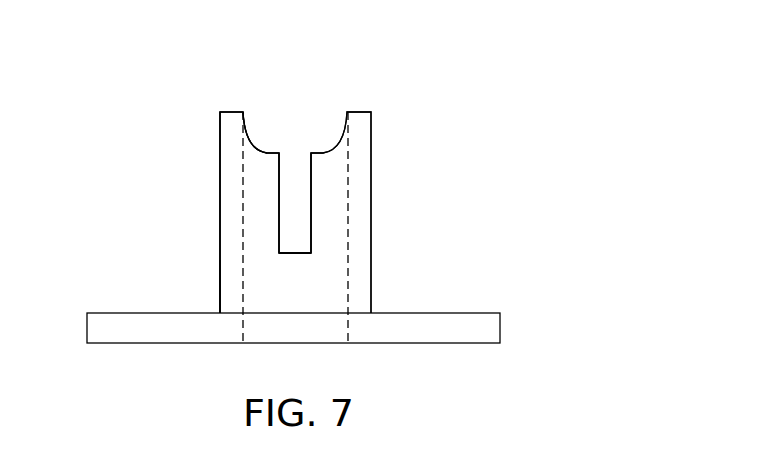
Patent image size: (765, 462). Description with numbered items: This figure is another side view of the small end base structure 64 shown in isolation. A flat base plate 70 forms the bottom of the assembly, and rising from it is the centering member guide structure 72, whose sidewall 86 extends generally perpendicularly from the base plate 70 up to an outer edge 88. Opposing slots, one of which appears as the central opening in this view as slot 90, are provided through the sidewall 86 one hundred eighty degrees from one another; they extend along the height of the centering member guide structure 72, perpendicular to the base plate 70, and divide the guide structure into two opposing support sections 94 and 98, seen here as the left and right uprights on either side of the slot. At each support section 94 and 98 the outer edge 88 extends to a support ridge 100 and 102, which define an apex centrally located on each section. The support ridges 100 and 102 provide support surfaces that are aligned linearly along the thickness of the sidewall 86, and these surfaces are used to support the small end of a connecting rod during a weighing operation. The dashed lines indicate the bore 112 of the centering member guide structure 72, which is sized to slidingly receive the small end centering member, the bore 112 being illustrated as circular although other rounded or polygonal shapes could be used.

The small end base structure 64 is at (421, 84).
The base plate 70 is at (130, 344).
The centering member guide structure 72 is at (199, 198).
The sidewall 86 is at (220, 288).
The outer edge 88 is at (250, 143).
The slot 90 is at (291, 258).
The support section 94 is at (183, 232).
The support section 98 is at (388, 206).
The support ridge 100 is at (233, 112).
The support ridge 102 is at (360, 110).
The bore 112 is at (307, 120).